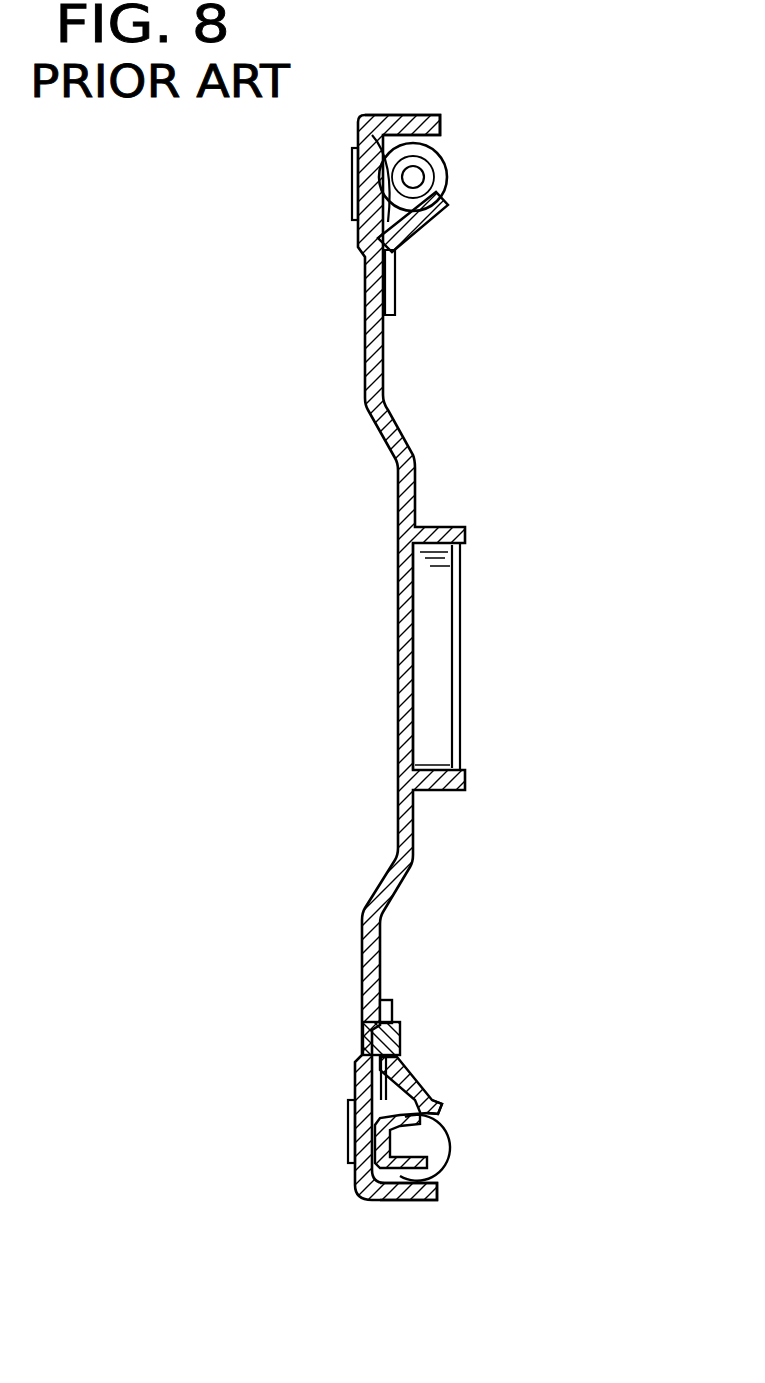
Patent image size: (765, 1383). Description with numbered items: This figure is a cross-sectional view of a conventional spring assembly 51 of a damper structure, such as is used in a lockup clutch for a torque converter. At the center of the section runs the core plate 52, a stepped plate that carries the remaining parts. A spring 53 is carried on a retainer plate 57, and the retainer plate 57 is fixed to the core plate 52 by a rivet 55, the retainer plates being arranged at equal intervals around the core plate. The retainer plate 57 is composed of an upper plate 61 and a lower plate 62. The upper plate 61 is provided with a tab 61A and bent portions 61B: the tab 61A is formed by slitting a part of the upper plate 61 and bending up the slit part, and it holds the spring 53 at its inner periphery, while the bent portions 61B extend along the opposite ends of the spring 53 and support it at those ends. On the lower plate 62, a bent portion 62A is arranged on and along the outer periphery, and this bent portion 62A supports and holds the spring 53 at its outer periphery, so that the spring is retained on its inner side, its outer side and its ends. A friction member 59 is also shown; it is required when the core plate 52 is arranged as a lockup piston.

The spring assembly 51 is at (578, 97).
The core plate 52 is at (363, 385).
The spring 53 is at (452, 180).
The rivet 55 is at (367, 1018).
The retainer plate 57 is at (400, 1060).
The friction member 59 is at (347, 1140).
The upper plate 61 is at (430, 217).
The tab 61A is at (440, 1103).
The bent portion 61B is at (408, 1185).
The lower plate 62 is at (357, 220).
The bent portion 62A is at (405, 117).